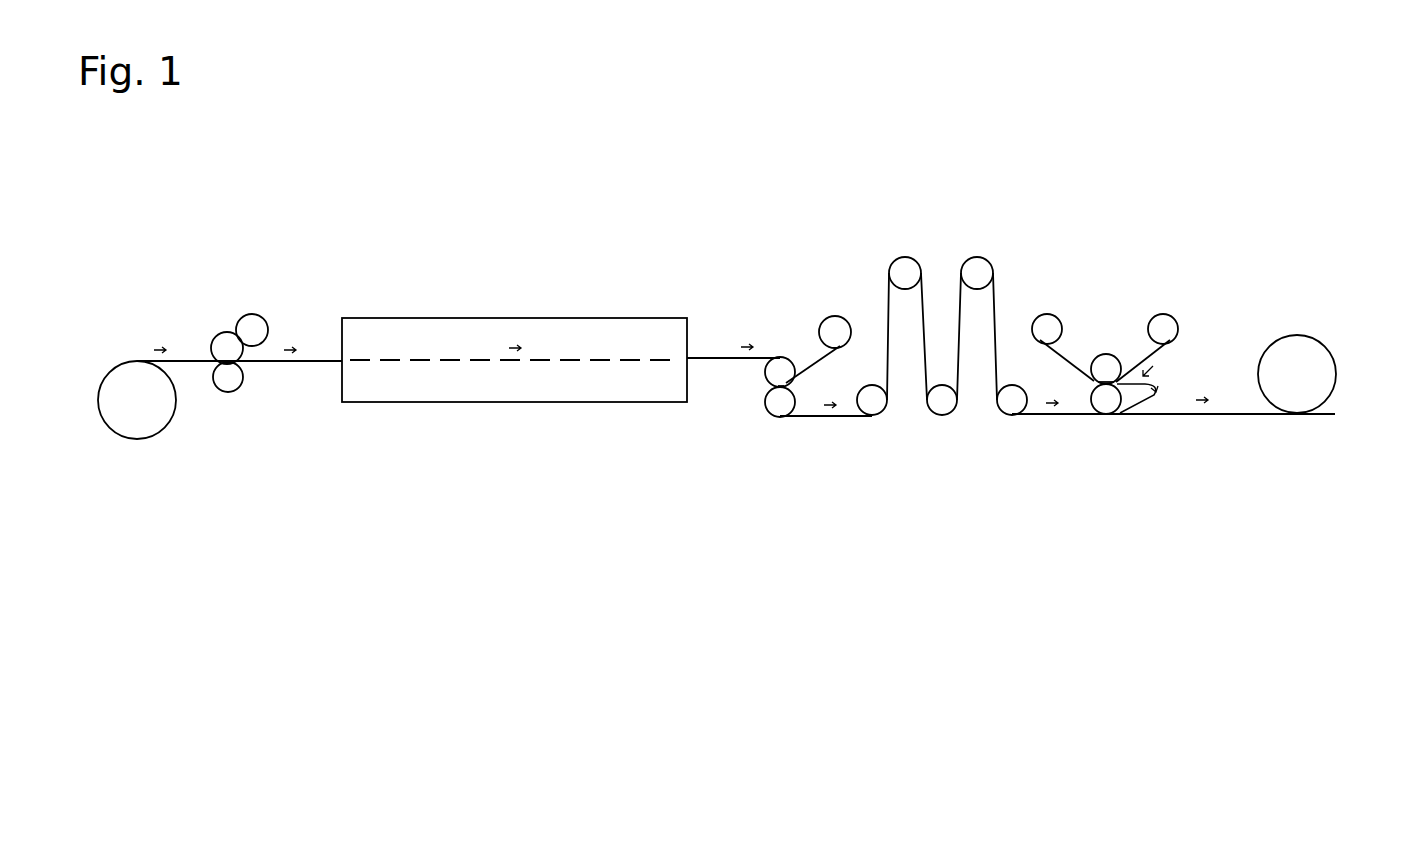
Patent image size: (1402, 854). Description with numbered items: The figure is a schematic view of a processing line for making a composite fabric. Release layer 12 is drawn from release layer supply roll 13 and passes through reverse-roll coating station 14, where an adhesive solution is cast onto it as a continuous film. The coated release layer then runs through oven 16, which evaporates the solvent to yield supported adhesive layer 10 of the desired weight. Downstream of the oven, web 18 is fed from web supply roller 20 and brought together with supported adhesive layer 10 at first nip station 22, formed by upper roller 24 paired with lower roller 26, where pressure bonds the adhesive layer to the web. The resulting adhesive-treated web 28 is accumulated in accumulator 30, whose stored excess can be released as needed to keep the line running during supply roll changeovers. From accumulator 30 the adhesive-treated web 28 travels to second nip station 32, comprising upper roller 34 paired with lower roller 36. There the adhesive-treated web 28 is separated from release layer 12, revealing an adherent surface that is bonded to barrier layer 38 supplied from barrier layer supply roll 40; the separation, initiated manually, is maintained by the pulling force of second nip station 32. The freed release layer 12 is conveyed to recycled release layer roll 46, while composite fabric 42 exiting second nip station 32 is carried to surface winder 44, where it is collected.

The supported adhesive layer 10 is at (718, 357).
The release layer 12 is at (192, 361).
The release layer supply roll 13 is at (145, 440).
The reverse-roll coating station 14 is at (247, 298).
The oven 16 is at (522, 402).
The web 18 is at (812, 364).
The web supply roller 20 is at (837, 315).
The first nip station 22 is at (751, 404).
The upper roller 24 is at (778, 357).
The lower roller 26 is at (773, 417).
The adhesive-treated web 28 is at (823, 417).
The accumulator 30 is at (940, 251).
The second nip station 32 is at (1126, 334).
The upper roller 34 is at (1103, 356).
The lower roller 36 is at (1107, 413).
The barrier layer 38 is at (1153, 358).
The barrier layer supply roll 40 is at (1168, 313).
The composite fabric 42 is at (1067, 366).
The surface winder 44 is at (1045, 315).
The recycled release layer roll 46 is at (1297, 335).